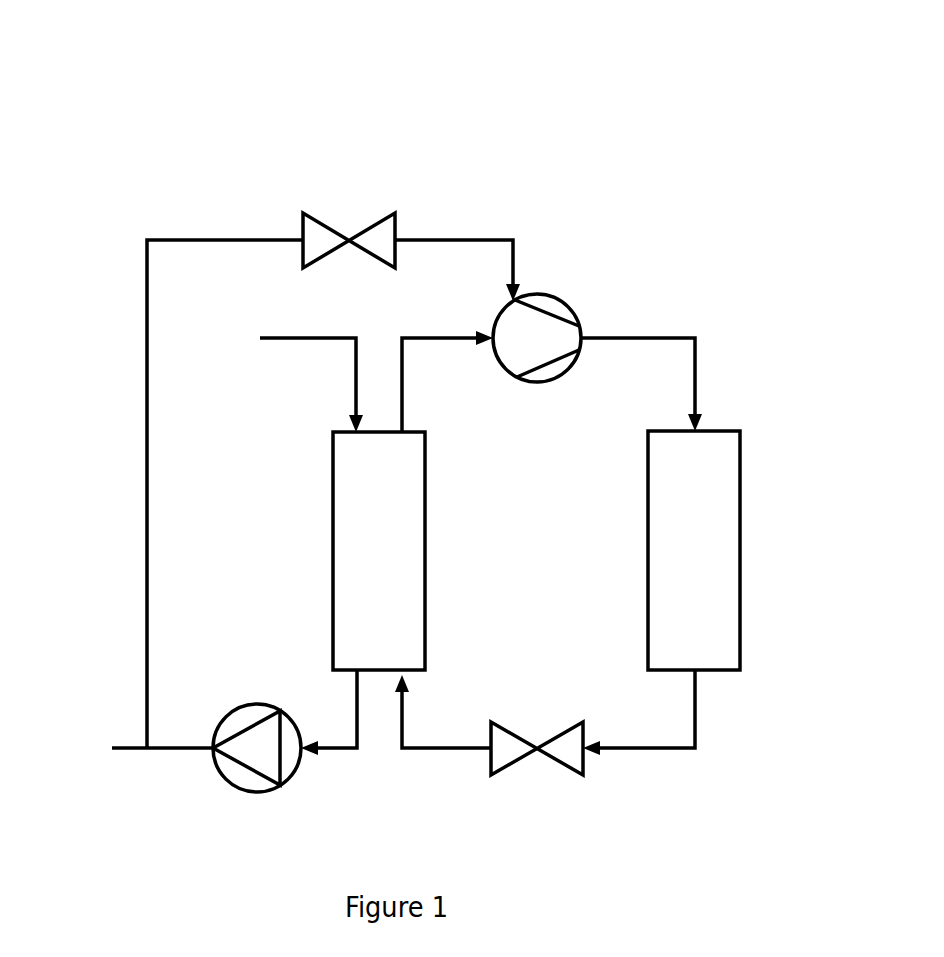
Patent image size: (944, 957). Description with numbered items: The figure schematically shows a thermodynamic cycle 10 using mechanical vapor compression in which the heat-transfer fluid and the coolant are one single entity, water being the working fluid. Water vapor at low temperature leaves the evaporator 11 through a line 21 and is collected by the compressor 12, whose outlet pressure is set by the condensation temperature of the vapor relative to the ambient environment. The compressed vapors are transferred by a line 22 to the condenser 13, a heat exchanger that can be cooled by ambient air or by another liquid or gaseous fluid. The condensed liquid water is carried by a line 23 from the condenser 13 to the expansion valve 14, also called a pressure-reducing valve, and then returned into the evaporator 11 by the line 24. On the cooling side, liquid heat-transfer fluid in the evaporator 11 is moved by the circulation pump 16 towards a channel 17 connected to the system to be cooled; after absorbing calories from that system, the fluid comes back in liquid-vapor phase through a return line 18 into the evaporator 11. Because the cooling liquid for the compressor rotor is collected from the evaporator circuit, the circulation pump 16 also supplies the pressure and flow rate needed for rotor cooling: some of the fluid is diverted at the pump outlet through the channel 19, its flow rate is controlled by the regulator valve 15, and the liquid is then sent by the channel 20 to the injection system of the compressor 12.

The thermodynamic cycle 10 is at (189, 87).
The evaporator 11 is at (332, 515).
The compressor 12 is at (537, 383).
The condenser 13 is at (731, 531).
The expansion valve 14 is at (513, 757).
The regulator valve 15 is at (348, 232).
The circulation pump 16 is at (245, 705).
The channel 17 is at (121, 745).
The return line 18 is at (263, 343).
The channel 19 is at (176, 237).
The channel 20 is at (469, 238).
The line 21 is at (430, 343).
The line 22 is at (658, 336).
The line 23 is at (630, 752).
The line 24 is at (438, 747).